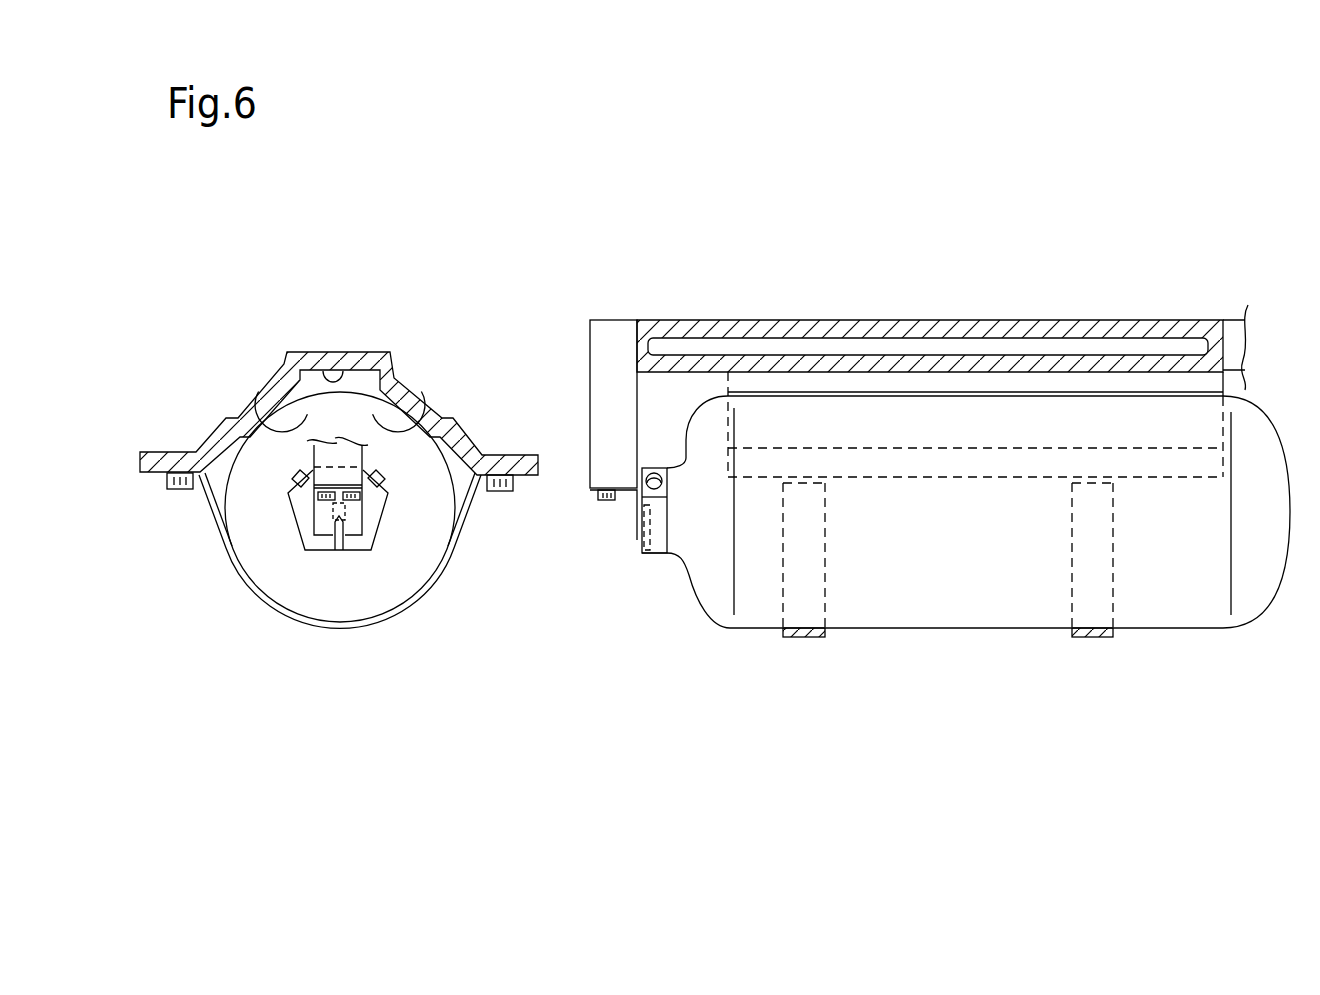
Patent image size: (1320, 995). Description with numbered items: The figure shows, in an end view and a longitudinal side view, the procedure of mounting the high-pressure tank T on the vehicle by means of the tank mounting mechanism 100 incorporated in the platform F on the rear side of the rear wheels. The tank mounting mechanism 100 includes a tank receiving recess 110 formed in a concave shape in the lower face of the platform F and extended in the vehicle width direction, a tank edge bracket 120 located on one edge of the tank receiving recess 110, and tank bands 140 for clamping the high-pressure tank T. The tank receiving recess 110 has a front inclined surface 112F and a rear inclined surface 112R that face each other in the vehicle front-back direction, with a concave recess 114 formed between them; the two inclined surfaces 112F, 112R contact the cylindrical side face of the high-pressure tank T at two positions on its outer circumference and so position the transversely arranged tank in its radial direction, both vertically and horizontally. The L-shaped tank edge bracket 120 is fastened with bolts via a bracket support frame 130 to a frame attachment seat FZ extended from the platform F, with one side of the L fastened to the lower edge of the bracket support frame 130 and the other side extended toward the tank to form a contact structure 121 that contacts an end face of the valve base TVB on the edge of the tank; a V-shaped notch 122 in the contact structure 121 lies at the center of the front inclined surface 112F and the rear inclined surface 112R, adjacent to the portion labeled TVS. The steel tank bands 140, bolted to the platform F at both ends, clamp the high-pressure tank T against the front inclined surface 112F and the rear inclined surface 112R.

The tank mounting mechanism 100 is at (556, 290).
The tank receiving recess 110 is at (703, 395).
The front inclined surface 112F is at (312, 395).
The rear inclined surface 112R is at (364, 395).
The concave recess 114 is at (328, 372).
The tank edge bracket 120 is at (318, 518).
The contact structure 121 is at (660, 553).
The V-shaped notch 122 is at (328, 544).
The bracket support frame 130 is at (362, 455).
The tank bands 140 is at (420, 605).
The platform F is at (976, 321).
The frame attachment seat FZ is at (700, 334).
The high-pressure tank T is at (367, 593).
The valve base TVB is at (372, 520).
The tank valve sensor TVS is at (343, 547).